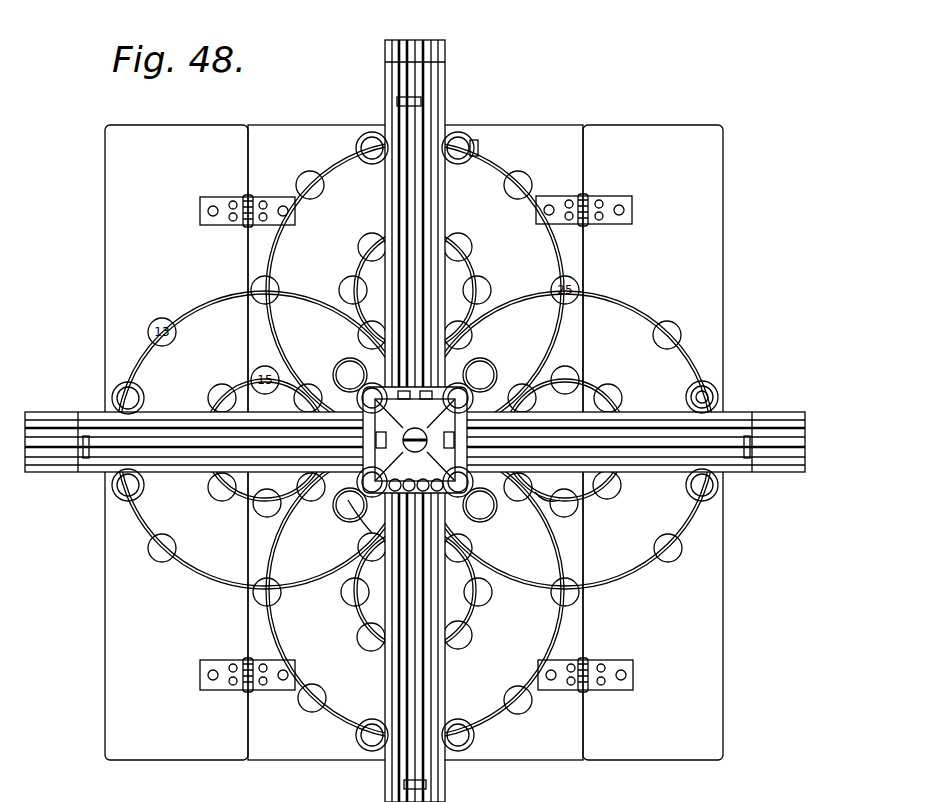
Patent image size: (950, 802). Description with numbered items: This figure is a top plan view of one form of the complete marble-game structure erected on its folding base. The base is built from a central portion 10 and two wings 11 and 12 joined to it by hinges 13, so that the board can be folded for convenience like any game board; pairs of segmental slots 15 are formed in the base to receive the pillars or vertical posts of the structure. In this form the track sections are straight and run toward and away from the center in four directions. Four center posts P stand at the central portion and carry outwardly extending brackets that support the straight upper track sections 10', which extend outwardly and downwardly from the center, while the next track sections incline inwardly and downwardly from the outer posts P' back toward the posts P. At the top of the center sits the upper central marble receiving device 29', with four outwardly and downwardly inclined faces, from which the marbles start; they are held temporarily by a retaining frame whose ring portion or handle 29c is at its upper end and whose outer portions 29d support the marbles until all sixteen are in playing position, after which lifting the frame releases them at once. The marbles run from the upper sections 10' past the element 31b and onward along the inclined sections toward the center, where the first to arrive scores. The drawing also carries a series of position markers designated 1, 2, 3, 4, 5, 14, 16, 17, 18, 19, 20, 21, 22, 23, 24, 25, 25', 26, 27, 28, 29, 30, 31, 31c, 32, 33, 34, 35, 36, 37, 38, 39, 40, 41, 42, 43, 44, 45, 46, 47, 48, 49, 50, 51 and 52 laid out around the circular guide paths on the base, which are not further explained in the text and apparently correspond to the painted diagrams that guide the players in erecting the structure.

The central portion 10 is at (415, 426).
The wing 11 is at (143, 133).
The wing 12 is at (673, 131).
The hinge 13 is at (214, 200).
The segmental slot 15 is at (523, 174).
The straight track section 10' is at (415, 421).
The element 31b is at (437, 62).
The bar end cap 31c is at (433, 44).
The ring socket 25 is at (427, 405).
The ring socket 25' is at (150, 393).
The outer post P' is at (403, 421).
The center post P is at (411, 430).
The bracket 22 is at (525, 108).
The upper central marble receiving device 29' is at (446, 383).
The ring portion 29c is at (540, 503).
The outer portion 29d is at (362, 523).
The pin ring 1 is at (372, 398).
The pin ring 2 is at (372, 482).
The pin ring 3 is at (458, 482).
The pin ring 4 is at (458, 398).
The pin ring 5 is at (702, 397).
The station 14 is at (222, 398).
The station 16 is at (265, 290).
The station 17 is at (353, 290).
The station 18 is at (308, 398).
The station 19 is at (372, 335).
The station 20 is at (310, 185).
The station 21 is at (372, 247).
The station 23 is at (458, 247).
The station 24 is at (477, 290).
The station 26 is at (565, 380).
The station 27 is at (522, 398).
The station 28 is at (458, 335).
The station 29 is at (667, 335).
The station 30 is at (608, 398).
The station 31 is at (668, 548).
The station 32 is at (607, 485).
The station 33 is at (564, 503).
The station 34 is at (565, 592).
The station 35 is at (478, 592).
The station 36 is at (458, 548).
The station 37 is at (518, 487).
The station 38 is at (518, 700).
The station 39 is at (458, 635).
The station 40 is at (312, 698).
The station 41 is at (371, 637).
The station 42 is at (355, 592).
The station 43 is at (267, 592).
The station 44 is at (267, 503).
The station 45 is at (311, 487).
The station 46 is at (372, 547).
The station 47 is at (162, 548).
The station 48 is at (222, 487).
The station 49 is at (350, 375).
The station 50 is at (480, 375).
The station 51 is at (480, 505).
The station 52 is at (350, 505).